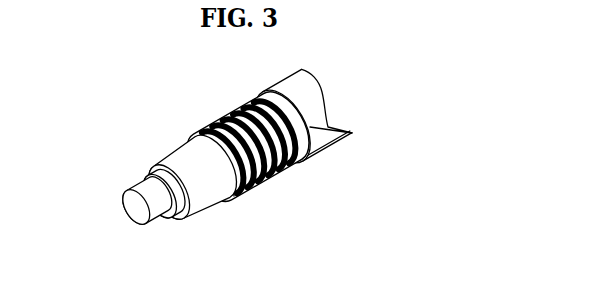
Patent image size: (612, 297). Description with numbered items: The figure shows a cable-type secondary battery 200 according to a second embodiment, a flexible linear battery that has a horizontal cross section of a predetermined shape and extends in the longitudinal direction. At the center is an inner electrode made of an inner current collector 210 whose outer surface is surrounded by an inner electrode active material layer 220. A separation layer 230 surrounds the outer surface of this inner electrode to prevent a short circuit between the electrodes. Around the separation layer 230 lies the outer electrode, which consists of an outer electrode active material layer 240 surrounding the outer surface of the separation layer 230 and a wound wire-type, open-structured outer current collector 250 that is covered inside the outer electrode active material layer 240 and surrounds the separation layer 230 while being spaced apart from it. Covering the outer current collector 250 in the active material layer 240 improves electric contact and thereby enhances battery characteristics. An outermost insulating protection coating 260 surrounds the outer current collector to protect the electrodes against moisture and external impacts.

The cable-type secondary battery 200 is at (234, 153).
The inner current collector 210 is at (152, 223).
The inner electrode active material layer 220 is at (176, 217).
The separation layer 230 is at (196, 210).
The outer electrode active material layer 240 is at (226, 200).
The open-structured outer current collector 250 is at (238, 193).
The outer sheath 260 is at (313, 146).